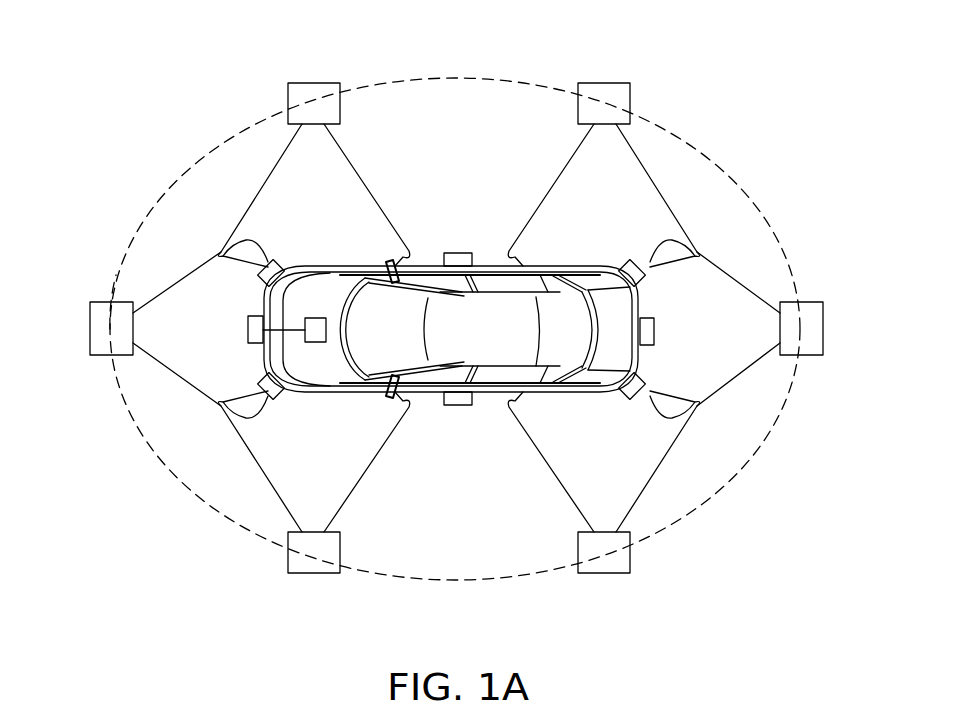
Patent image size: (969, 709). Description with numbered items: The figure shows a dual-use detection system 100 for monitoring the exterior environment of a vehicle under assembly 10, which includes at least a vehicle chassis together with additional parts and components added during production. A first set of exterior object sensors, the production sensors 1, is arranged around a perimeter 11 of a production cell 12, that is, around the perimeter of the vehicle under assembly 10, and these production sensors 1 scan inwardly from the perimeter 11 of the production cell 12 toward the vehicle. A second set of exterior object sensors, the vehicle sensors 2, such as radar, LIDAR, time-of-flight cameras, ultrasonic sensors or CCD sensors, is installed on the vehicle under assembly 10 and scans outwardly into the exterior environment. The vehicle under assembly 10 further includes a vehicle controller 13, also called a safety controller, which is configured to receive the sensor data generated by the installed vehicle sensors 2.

The dual-use detection system 100 is at (138, 52).
The production sensors 1 is at (312, 83).
The vehicle sensors 2 is at (266, 262).
The vehicle under assembly 10 is at (337, 344).
The perimeter 11 is at (133, 238).
The production cell 12 is at (204, 191).
The vehicle controller 13 is at (263, 336).